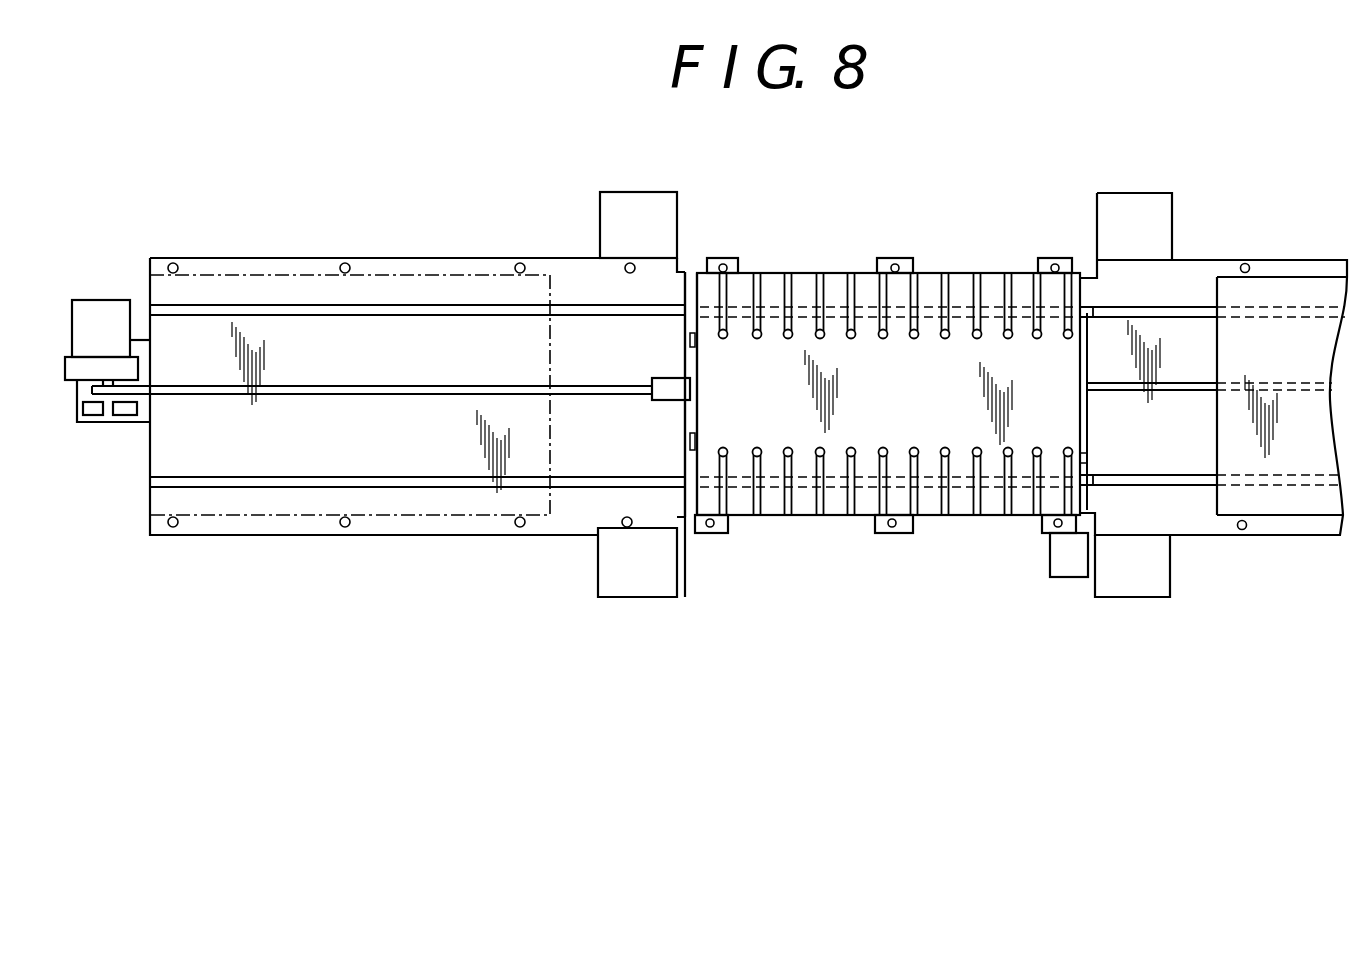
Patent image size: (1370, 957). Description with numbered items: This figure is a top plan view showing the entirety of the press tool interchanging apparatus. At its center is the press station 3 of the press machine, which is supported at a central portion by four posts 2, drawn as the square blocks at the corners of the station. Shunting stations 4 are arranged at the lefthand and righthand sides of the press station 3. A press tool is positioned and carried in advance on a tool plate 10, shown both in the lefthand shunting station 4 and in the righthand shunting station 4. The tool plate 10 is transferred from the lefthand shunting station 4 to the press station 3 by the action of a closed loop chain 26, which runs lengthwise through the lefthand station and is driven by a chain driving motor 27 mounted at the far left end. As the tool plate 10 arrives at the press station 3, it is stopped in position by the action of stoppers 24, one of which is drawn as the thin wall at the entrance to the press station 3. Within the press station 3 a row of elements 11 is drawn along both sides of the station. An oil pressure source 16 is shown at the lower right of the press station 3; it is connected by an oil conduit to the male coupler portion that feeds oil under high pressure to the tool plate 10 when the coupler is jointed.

The post 2 is at (625, 215).
The press station 3 is at (922, 520).
The shunting station 4 is at (322, 258).
The tool plate 10 is at (422, 283).
The pin 11 is at (757, 500).
The oil pressure source 16 is at (1060, 555).
The stopper 24 is at (692, 305).
The closed loop chain 26 is at (403, 385).
The chain driving motor 27 is at (110, 325).